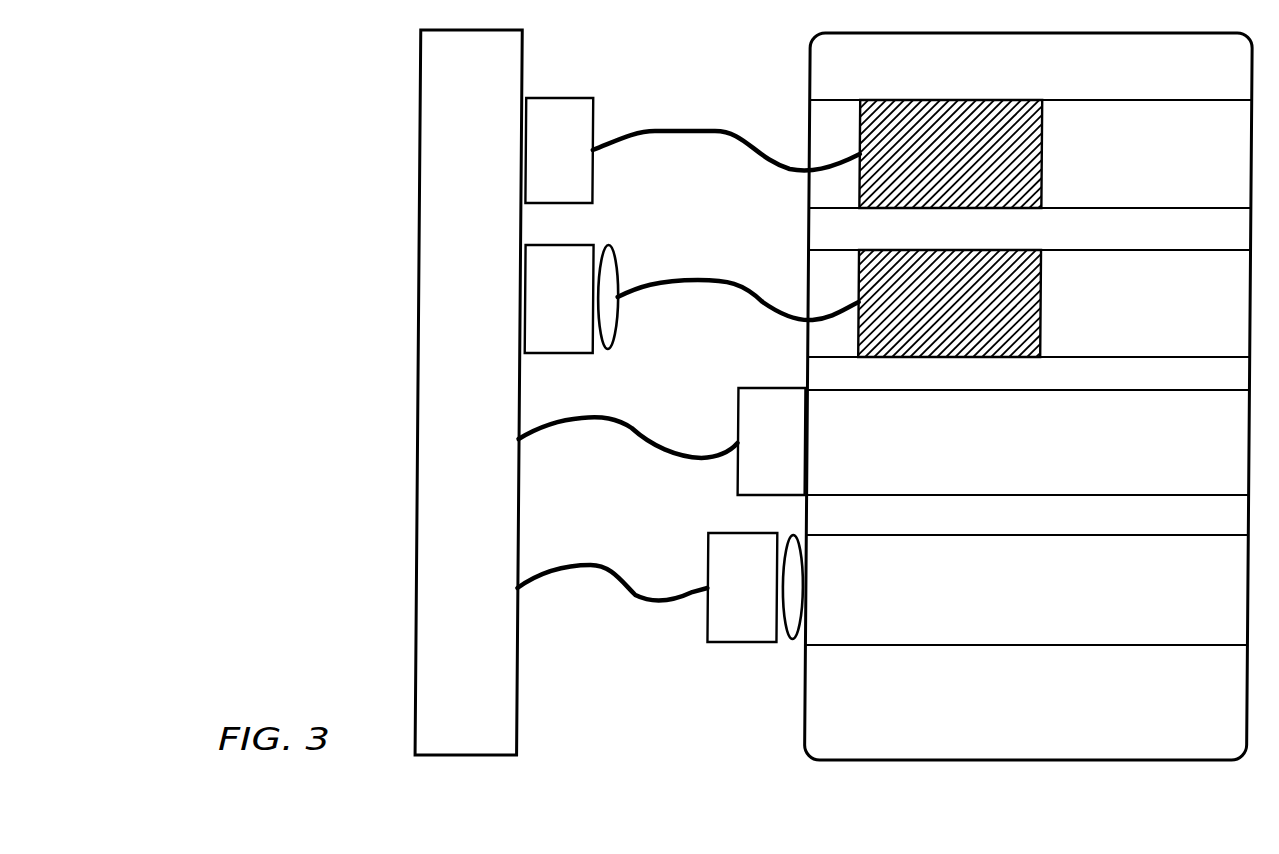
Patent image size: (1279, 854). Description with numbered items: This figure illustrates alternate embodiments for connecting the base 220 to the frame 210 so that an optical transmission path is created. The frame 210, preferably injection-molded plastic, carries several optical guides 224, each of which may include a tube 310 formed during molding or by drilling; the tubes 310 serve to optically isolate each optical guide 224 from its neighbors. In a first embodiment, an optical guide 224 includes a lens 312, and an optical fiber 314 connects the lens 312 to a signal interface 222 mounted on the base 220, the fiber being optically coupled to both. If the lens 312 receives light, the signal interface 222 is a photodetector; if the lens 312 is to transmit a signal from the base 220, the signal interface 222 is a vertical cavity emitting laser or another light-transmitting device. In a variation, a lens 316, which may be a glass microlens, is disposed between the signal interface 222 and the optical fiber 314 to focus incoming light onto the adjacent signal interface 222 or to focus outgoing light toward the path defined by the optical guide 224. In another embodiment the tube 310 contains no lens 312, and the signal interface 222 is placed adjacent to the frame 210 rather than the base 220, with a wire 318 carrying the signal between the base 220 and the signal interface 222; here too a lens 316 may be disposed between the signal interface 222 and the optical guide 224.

The frame 210 is at (1052, 73).
The base 220 is at (492, 68).
The signal interface 222 is at (577, 163).
The optical guide 224 is at (1134, 166).
The tube 310 is at (1188, 166).
The lens 312 is at (969, 165).
The optical fiber 314 is at (771, 167).
The lens 316 is at (618, 338).
The wire 318 is at (651, 448).